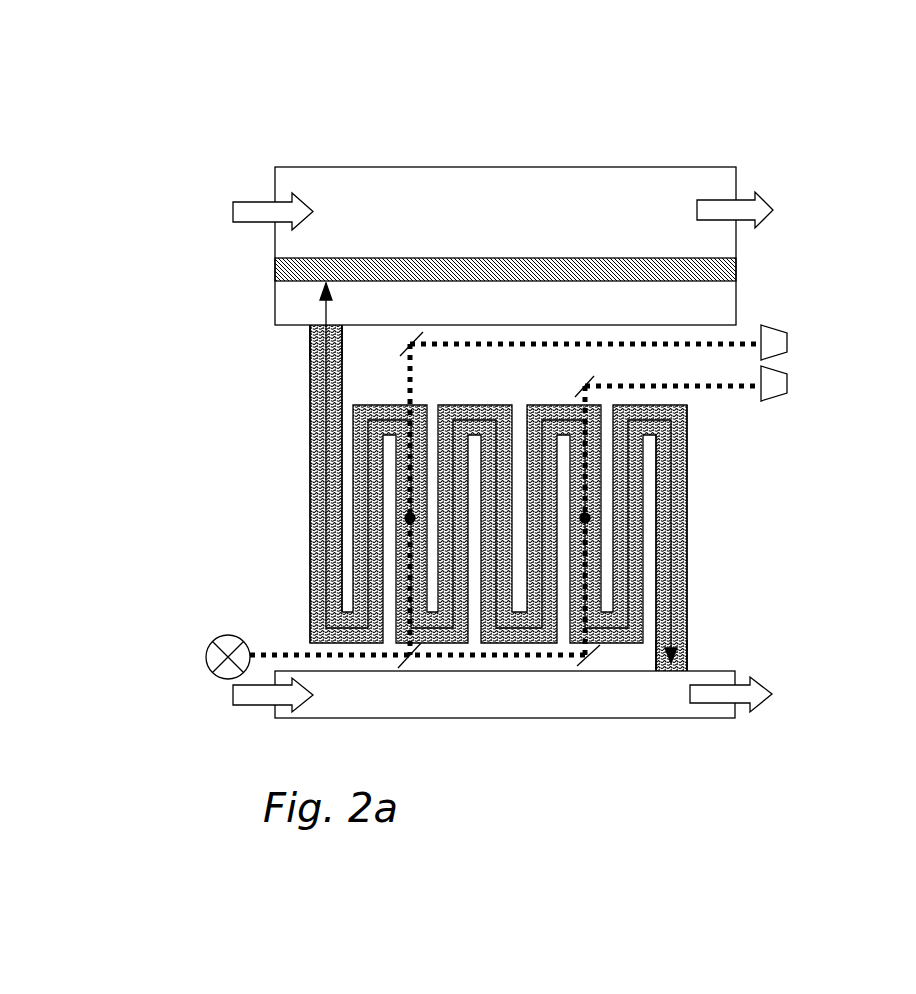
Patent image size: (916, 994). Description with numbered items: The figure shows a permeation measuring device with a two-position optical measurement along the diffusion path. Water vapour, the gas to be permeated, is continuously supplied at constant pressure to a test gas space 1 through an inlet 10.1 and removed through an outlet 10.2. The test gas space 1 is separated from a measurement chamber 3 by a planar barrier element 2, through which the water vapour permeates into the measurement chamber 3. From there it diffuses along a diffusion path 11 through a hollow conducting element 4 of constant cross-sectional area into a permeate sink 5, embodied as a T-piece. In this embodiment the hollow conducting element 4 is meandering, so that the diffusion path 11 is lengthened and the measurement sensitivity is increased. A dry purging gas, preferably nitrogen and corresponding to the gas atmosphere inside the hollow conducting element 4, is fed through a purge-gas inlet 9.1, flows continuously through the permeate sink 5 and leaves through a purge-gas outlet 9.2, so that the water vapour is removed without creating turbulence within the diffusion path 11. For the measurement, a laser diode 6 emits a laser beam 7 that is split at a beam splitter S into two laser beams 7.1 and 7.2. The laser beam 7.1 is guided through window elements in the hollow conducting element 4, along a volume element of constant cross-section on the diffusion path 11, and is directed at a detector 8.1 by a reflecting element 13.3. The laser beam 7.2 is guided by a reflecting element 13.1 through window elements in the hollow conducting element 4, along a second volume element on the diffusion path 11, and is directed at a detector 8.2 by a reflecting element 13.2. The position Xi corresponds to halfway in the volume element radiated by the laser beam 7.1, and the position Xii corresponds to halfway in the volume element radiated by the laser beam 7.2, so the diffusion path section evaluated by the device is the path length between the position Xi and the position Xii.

The test gas space 1 is at (275, 247).
The barrier element 2 is at (275, 268).
The measurement chamber 3 is at (274, 330).
The hollow conducting element 4 is at (688, 503).
The permeate sink 5 is at (733, 668).
The laser diode 6 is at (211, 640).
The laser beam 7 is at (291, 655).
The laser beam 7.1 is at (717, 344).
The laser beam 7.2 is at (705, 386).
The detector 8.1 is at (773, 343).
The detector 8.2 is at (773, 387).
The purge-gas inlet 9.1 is at (232, 695).
The purge-gas outlet 9.2 is at (775, 697).
The inlet 10.1 is at (236, 204).
The outlet 10.2 is at (773, 212).
The diffusion path 11 is at (310, 455).
The reflecting element 13.1 is at (590, 658).
The reflecting element 13.2 is at (583, 385).
The reflecting element 13.3 is at (412, 340).
The beam splitter S is at (413, 670).
The position Xi is at (410, 518).
The position Xii is at (585, 518).